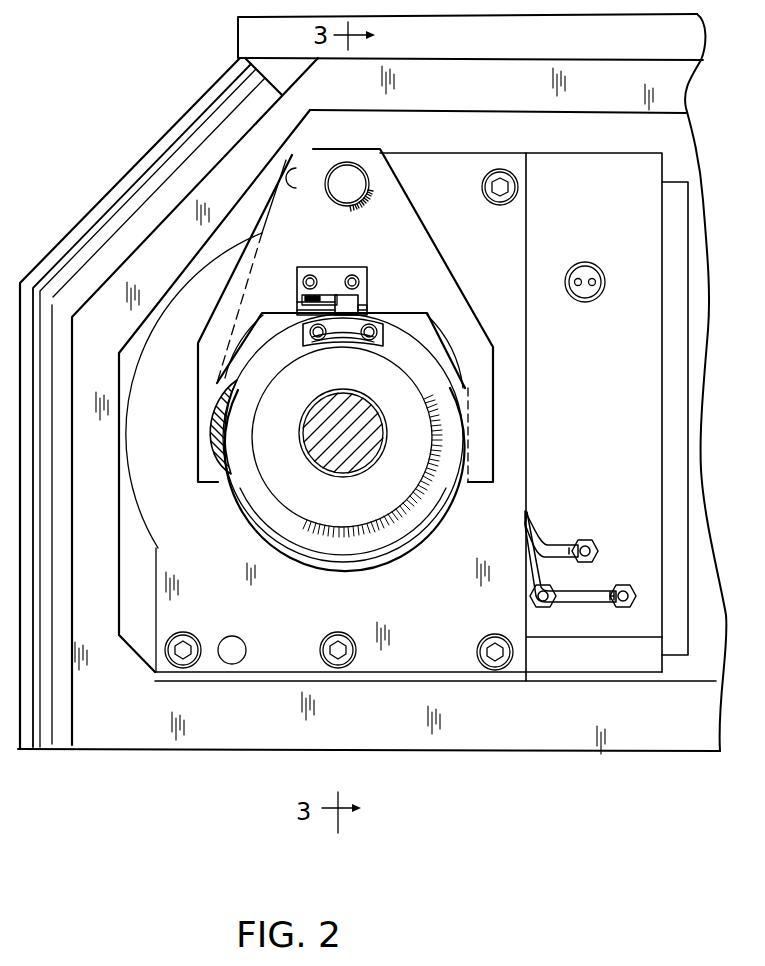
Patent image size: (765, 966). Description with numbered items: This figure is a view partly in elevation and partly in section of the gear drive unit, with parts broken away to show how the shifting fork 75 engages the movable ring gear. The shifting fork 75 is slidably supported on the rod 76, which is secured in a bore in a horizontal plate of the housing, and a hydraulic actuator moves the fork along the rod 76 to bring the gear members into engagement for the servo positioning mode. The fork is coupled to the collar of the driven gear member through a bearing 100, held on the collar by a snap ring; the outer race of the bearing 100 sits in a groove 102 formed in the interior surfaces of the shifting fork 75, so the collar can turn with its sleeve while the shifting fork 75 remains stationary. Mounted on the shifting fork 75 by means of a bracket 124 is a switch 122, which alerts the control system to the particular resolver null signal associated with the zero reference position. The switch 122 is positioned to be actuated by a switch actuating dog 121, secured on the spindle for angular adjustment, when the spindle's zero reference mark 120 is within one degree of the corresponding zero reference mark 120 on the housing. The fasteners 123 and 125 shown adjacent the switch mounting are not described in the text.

The shifting fork 75 is at (415, 226).
The rod 76 is at (347, 172).
The bearing 100 is at (225, 447).
The groove 102 is at (219, 384).
The reference position marks 120 is at (343, 353).
The switch actuating dog 121 is at (352, 305).
The switch 122 is at (327, 294).
The screw 123 is at (371, 338).
The bracket 124 is at (353, 272).
The screw 125 is at (356, 282).